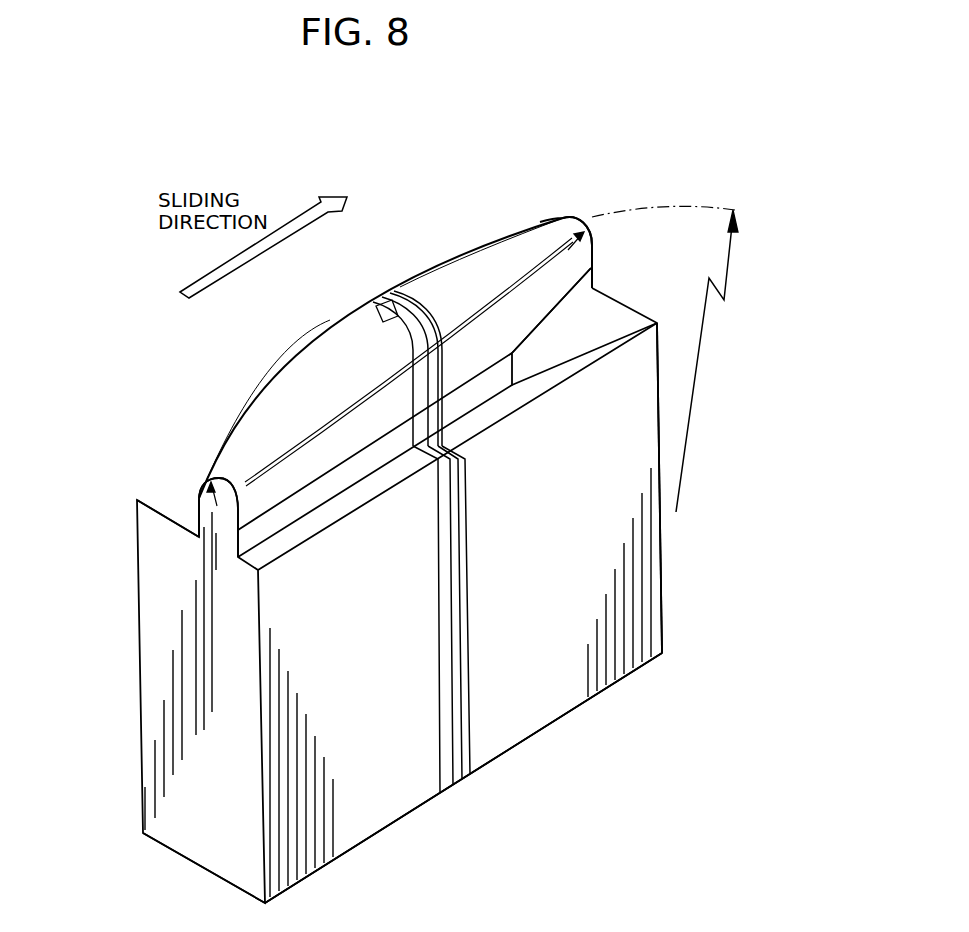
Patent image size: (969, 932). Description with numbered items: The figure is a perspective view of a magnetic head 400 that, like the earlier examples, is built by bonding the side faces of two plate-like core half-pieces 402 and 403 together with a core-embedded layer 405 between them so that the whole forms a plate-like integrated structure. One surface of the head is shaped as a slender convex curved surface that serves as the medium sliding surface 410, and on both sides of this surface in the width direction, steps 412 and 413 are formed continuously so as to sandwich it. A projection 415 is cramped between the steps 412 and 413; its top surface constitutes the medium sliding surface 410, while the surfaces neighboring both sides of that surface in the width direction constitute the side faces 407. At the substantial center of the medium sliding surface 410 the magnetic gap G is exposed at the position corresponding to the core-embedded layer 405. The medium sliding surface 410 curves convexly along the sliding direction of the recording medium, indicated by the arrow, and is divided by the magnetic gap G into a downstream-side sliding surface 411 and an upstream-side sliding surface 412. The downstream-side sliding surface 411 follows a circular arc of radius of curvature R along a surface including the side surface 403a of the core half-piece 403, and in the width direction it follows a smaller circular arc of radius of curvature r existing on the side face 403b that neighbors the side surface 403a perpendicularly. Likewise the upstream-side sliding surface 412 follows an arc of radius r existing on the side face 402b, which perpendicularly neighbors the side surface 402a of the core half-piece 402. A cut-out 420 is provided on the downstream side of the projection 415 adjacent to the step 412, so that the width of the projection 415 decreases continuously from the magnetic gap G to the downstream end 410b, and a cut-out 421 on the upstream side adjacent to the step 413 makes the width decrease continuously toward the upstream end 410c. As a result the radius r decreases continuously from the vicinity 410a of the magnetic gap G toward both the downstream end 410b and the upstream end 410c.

The magnetic head 400 is at (578, 150).
The core half-piece 402 is at (200, 837).
The side surface of core half-piece 402a is at (353, 802).
The side face of core half-piece 402b is at (157, 683).
The core half-piece 403 is at (630, 607).
The side surface of core half-piece 403a is at (535, 670).
The side face of core half-piece 403b is at (664, 566).
The core-embedded layer 405 is at (450, 777).
The side face 407 is at (197, 518).
The medium sliding surface 410 is at (457, 283).
The vicinity of the magnetic gap 410a is at (423, 303).
The downstream end 410b is at (573, 221).
The upstream end 410c is at (201, 497).
The downstream-side sliding surface 411 is at (518, 257).
The step 412 is at (317, 373).
The step 413 is at (155, 497).
The projection 415 is at (192, 508).
The cut-out 420 is at (553, 323).
The cut-out 421 is at (205, 498).
The magnetic gap G is at (360, 327).
The radius of curvature R is at (665, 359).
The radius of curvature r is at (395, 373).